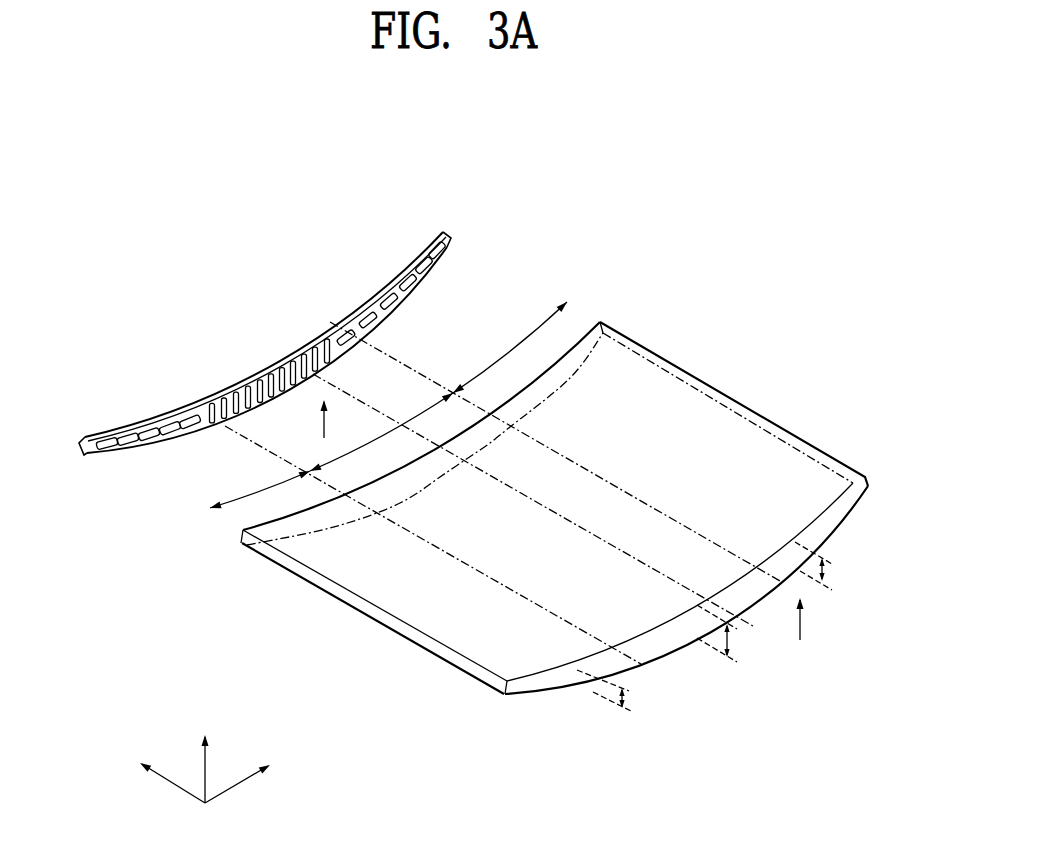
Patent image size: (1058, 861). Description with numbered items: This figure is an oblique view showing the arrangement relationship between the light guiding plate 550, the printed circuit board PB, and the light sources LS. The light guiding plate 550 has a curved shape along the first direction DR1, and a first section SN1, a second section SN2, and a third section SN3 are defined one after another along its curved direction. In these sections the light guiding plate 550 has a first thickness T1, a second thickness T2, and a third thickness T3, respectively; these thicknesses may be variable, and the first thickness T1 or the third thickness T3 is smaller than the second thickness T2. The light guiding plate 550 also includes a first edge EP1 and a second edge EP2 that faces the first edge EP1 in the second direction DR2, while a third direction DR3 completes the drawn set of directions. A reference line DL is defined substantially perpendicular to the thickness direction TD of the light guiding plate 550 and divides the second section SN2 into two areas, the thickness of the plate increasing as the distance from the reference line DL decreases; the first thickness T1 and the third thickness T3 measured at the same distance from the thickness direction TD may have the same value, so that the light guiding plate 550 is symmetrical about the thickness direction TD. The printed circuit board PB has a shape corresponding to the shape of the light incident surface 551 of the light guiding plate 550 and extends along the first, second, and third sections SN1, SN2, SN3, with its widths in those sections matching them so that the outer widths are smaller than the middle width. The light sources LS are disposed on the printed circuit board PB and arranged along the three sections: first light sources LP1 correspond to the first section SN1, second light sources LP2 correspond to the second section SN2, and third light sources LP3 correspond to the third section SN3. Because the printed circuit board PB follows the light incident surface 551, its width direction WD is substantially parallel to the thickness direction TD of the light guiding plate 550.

The light guiding plate 550 is at (510, 736).
The light incident surface 551 is at (240, 532).
The first edge EP1 is at (368, 613).
The second edge EP2 is at (755, 410).
The first section SN1 is at (260, 490).
The second section SN2 is at (382, 432).
The third section SN3 is at (510, 347).
The width direction WD is at (310, 419).
The first thickness T1 is at (614, 695).
The second thickness T2 is at (726, 633).
The third thickness T3 is at (822, 566).
The thickness direction TD is at (786, 619).
The reference line DL is at (753, 626).
The light sources LS is at (358, 176).
The printed circuit board PB is at (444, 231).
The first light sources LP1 is at (105, 432).
The second light sources LP2 is at (233, 397).
The third light sources LP3 is at (388, 300).
The first direction DR1 is at (257, 779).
The second direction DR2 is at (152, 777).
The third direction DR3 is at (205, 755).